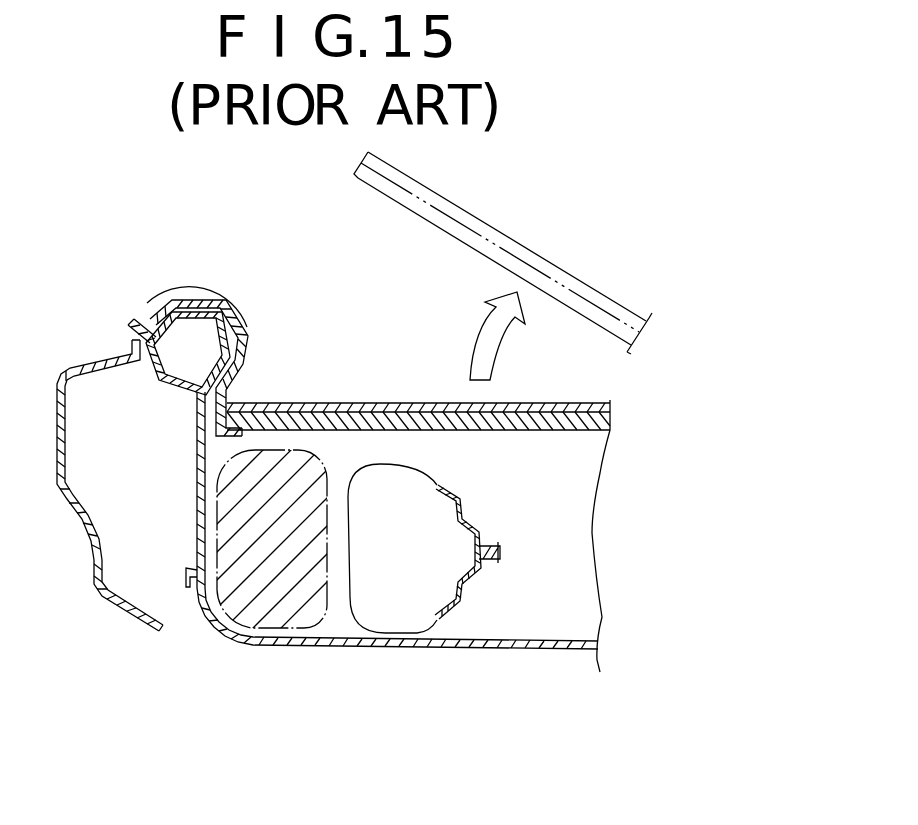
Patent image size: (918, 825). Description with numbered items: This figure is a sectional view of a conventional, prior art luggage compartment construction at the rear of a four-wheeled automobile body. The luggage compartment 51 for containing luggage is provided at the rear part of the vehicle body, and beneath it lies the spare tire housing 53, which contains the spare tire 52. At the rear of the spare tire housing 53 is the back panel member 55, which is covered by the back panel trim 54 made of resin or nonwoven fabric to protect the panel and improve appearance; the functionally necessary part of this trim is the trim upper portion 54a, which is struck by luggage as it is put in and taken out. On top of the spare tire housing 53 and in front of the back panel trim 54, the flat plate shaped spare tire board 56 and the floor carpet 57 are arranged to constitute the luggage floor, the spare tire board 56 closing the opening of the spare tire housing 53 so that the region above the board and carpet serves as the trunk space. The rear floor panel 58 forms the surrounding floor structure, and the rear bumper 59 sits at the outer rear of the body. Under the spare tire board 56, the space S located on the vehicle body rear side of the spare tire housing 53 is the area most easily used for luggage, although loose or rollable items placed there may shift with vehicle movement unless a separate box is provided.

The luggage compartment 51 is at (403, 278).
The spare tire 52 is at (423, 636).
The spare tire housing 53 is at (567, 486).
The back panel trim 54 is at (237, 366).
The trim upper portion 54a is at (198, 287).
The back panel member 55 is at (158, 376).
The spare tire board 56 is at (380, 182).
The floor carpet 57 is at (404, 171).
The rear floor panel 58 is at (262, 650).
The rear bumper 59 is at (121, 607).
The space S is at (230, 524).